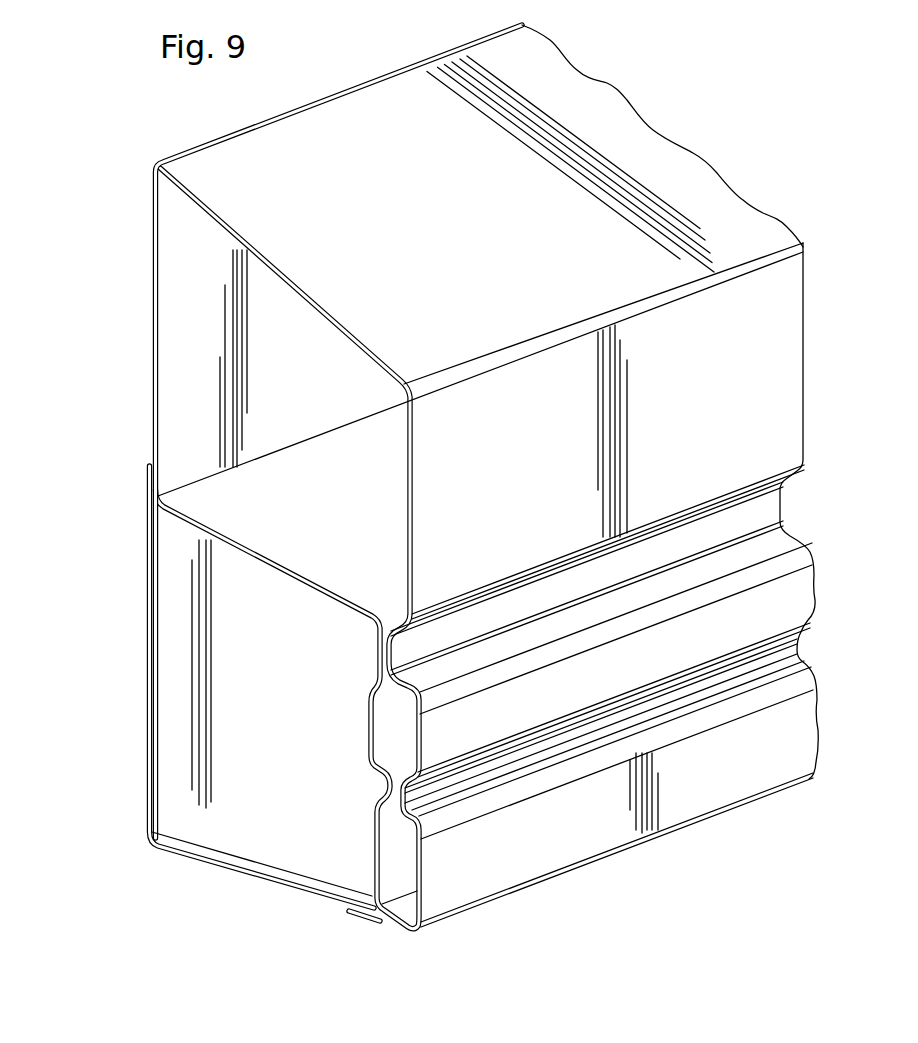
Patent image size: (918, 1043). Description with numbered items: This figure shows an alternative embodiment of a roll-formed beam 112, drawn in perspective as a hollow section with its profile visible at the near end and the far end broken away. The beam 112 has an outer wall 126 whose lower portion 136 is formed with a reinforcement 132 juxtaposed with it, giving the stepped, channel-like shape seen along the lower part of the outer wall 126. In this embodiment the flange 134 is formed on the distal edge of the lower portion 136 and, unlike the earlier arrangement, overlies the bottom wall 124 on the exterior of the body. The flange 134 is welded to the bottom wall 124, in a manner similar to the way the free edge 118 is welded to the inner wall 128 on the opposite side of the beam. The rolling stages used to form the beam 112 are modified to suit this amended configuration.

The beam 112 is at (139, 370).
The free edge 118 is at (150, 461).
The bottom wall 124 is at (240, 860).
The outer wall 126 is at (472, 447).
The inner wall 128 is at (153, 272).
The reinforcement 132 is at (368, 711).
The flange 134 is at (388, 927).
The lower portion 136 is at (462, 845).